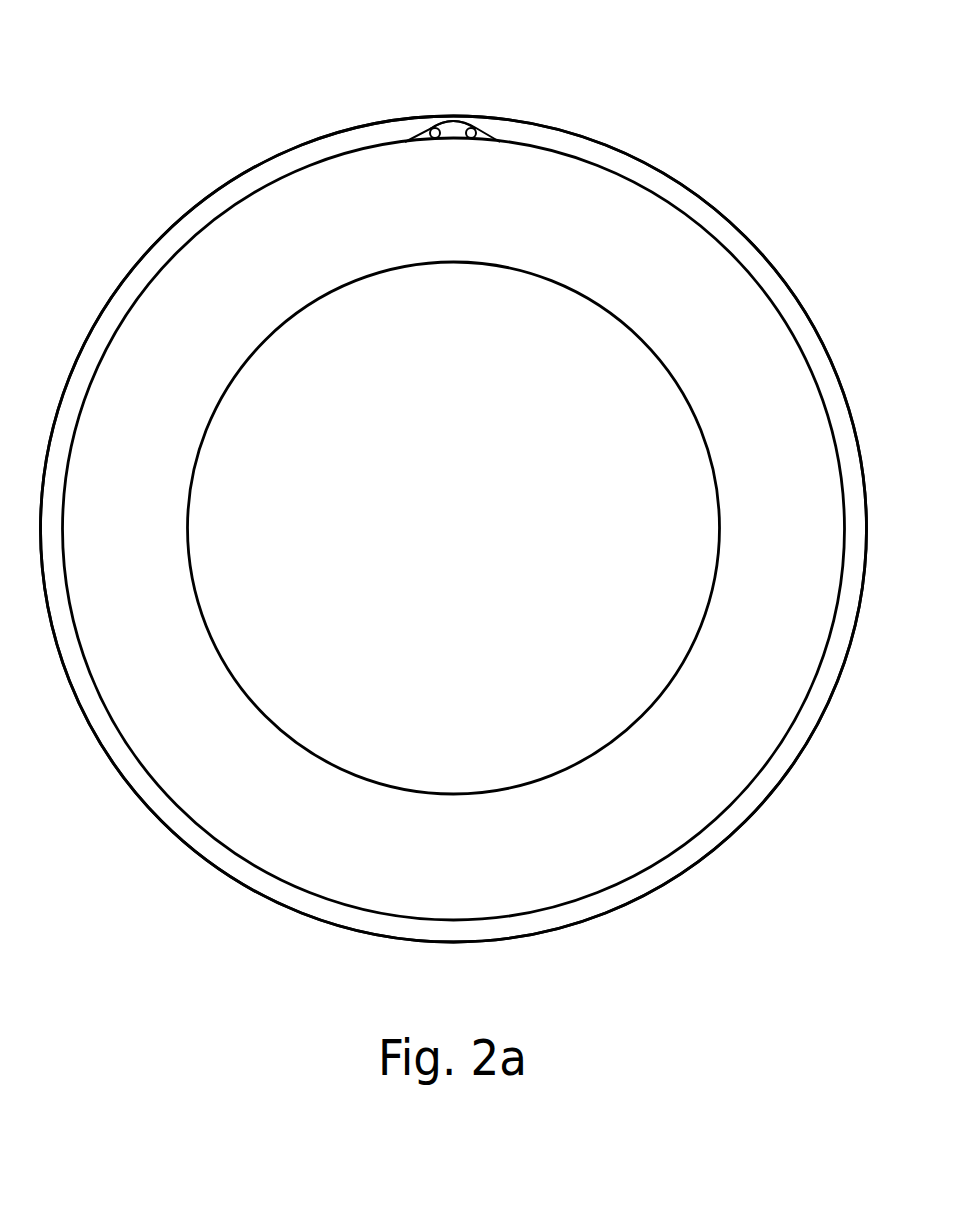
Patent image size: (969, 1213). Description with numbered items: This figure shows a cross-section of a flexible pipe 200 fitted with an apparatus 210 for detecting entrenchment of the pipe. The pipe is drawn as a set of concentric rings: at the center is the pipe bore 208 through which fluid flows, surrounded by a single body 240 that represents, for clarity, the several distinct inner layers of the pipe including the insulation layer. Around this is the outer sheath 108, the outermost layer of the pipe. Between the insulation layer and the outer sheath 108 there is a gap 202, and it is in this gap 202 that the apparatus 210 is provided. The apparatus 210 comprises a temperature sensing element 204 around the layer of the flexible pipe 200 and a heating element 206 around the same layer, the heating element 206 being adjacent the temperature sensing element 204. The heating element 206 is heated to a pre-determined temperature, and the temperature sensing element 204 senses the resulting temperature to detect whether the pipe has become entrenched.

The flexible pipe 200 is at (706, 180).
The outer sheath 108 is at (200, 208).
The single body 240 is at (157, 315).
The pipe bore 208 is at (304, 559).
The apparatus for detecting entrenchment 210 is at (373, 95).
The gap 202 is at (455, 133).
The temperature sensing element 204 is at (486, 134).
The heating element 206 is at (429, 134).